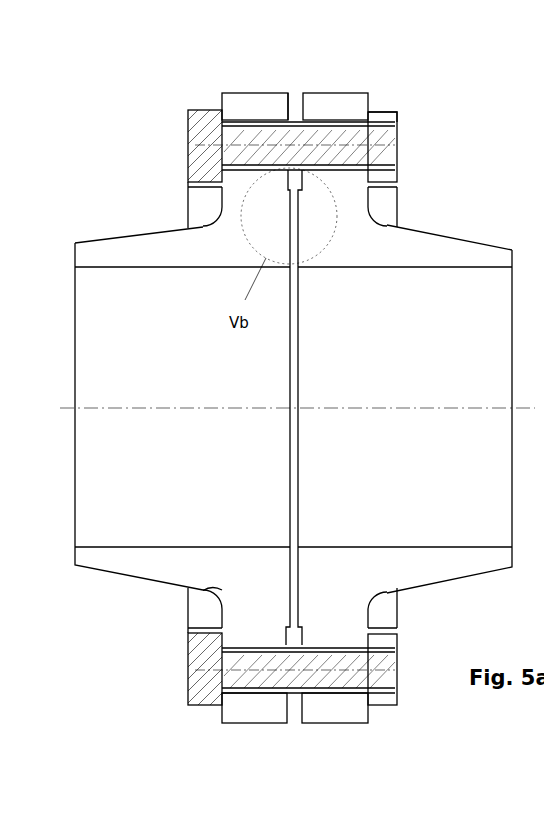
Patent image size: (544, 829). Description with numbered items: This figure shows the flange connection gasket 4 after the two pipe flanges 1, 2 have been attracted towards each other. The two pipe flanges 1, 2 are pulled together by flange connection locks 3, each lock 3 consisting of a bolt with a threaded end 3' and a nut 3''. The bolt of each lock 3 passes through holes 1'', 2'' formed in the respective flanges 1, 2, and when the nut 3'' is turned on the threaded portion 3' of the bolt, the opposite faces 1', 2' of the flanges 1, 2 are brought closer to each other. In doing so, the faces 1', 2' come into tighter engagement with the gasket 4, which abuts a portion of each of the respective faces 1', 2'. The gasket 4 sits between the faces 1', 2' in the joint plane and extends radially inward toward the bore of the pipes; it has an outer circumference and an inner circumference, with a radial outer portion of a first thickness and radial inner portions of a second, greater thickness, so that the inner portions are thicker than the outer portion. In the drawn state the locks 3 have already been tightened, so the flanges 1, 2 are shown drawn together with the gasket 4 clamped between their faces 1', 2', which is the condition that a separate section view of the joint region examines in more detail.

The pipe flange 1 is at (182, 397).
The flange face 1' is at (304, 83).
The hole in flange 1'' is at (246, 85).
The pipe flange 2 is at (405, 395).
The flange face 2' is at (310, 734).
The hole in flange 2'' is at (350, 81).
The flange connection lock 3 is at (178, 120).
The threaded end of bolt 3' is at (425, 138).
The nut 3'' is at (405, 97).
The gasket 4 is at (277, 582).